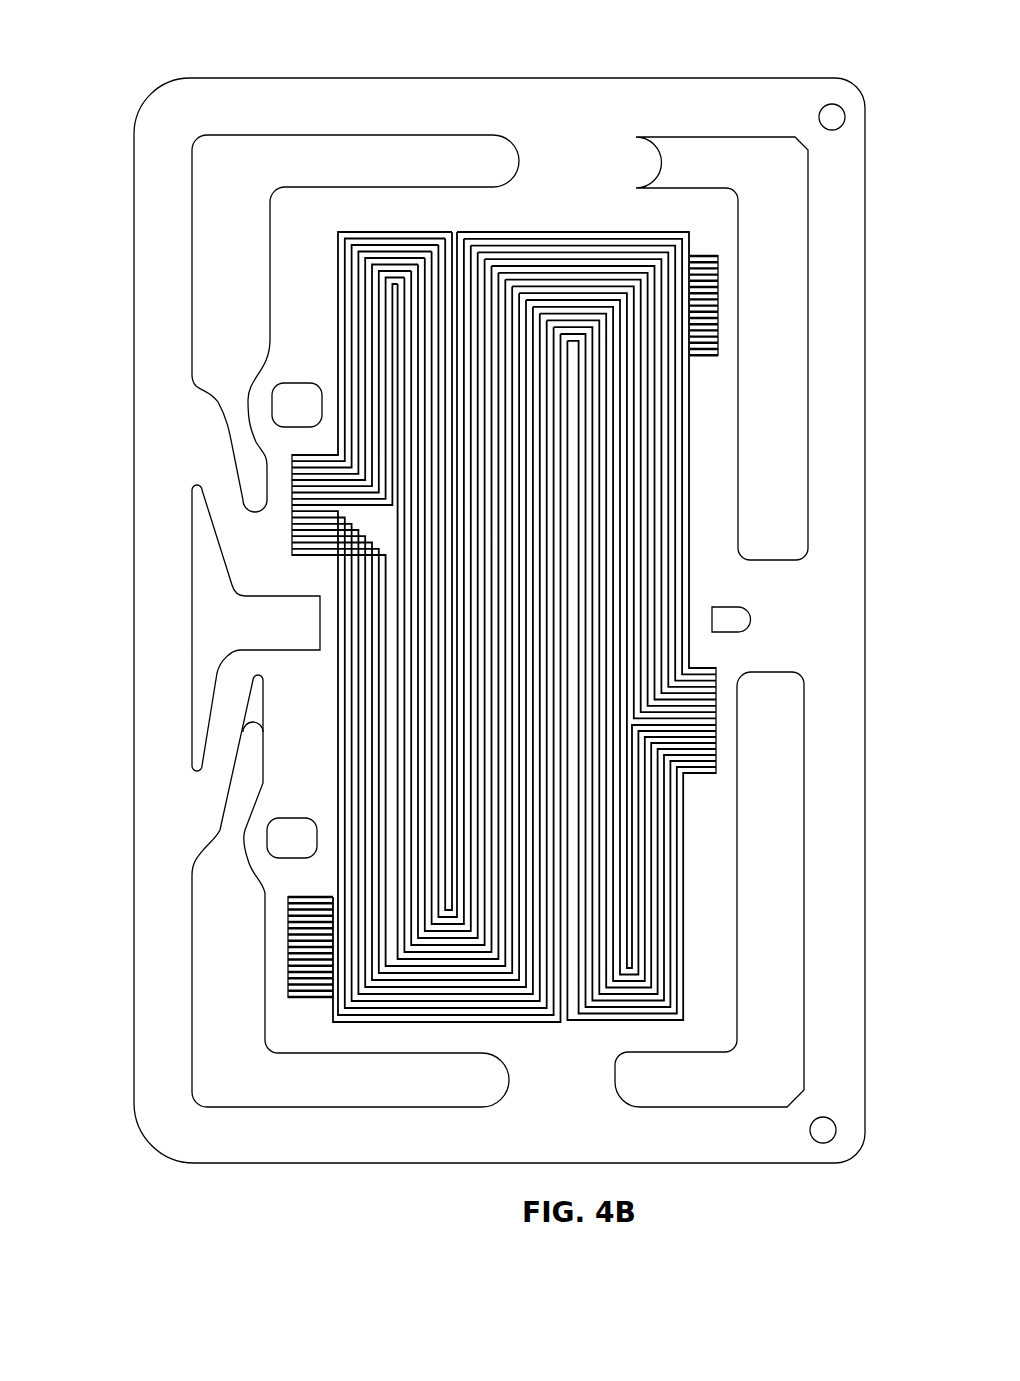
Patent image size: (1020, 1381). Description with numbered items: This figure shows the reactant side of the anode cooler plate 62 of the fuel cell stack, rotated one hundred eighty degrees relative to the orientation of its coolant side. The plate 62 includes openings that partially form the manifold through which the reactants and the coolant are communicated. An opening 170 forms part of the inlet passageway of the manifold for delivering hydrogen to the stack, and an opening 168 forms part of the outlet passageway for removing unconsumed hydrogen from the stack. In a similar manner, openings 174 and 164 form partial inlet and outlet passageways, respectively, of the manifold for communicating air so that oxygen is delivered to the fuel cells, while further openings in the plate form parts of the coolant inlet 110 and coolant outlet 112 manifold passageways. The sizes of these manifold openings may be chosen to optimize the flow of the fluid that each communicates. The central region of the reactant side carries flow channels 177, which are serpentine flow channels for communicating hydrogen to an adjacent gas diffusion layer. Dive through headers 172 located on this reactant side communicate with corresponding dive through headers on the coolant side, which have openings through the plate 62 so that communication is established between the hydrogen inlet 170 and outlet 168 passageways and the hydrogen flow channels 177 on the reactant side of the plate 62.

The anode cooler plate 62 is at (349, 70).
The opening 170 is at (355, 323).
The opening 164 is at (722, 348).
The dive through headers 172 is at (292, 502).
The coolant outlet manifold passageway 112 is at (205, 623).
The coolant inlet manifold passageway 110 is at (748, 622).
The opening 174 is at (350, 891).
The opening 168 is at (709, 889).
The flow channels 177 is at (608, 1005).